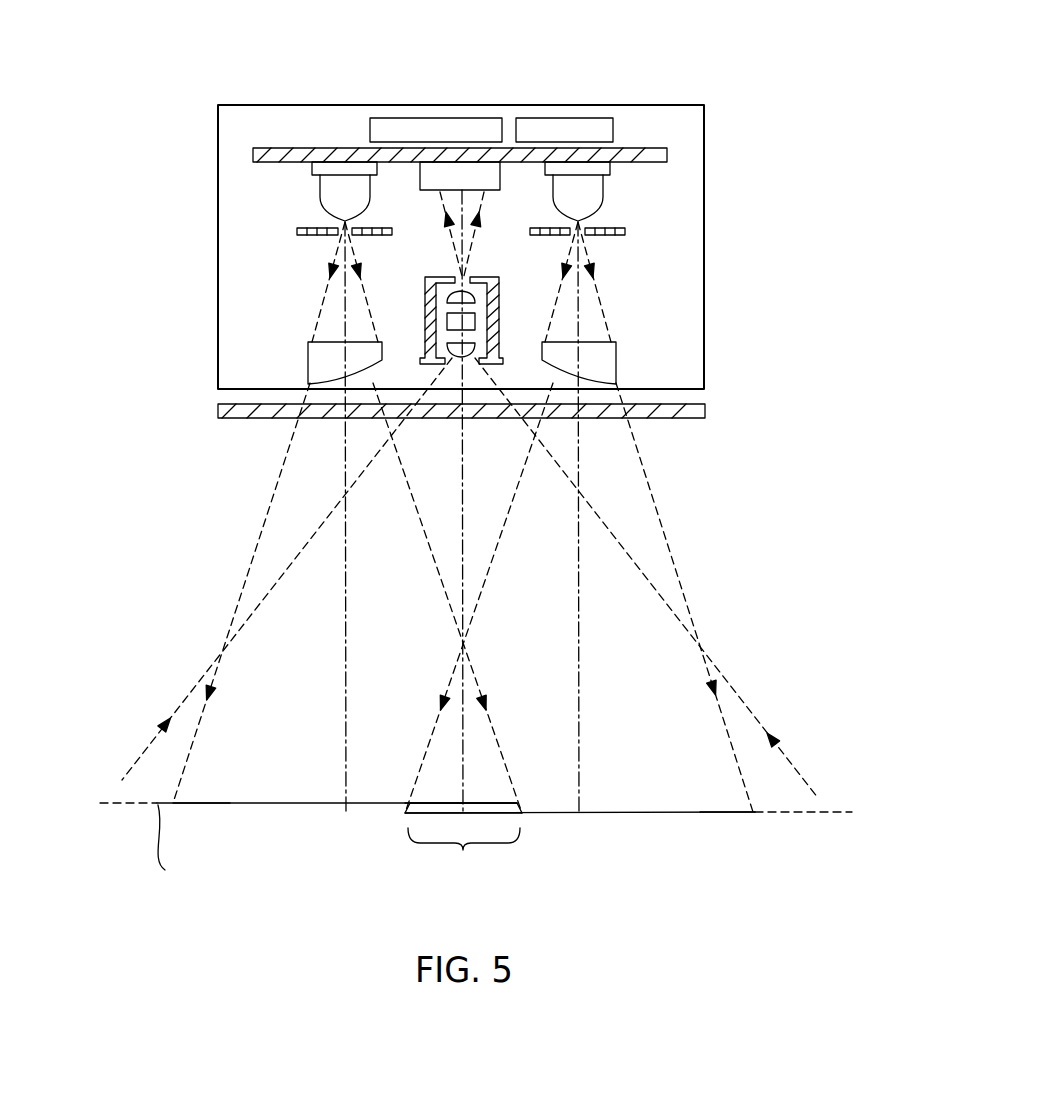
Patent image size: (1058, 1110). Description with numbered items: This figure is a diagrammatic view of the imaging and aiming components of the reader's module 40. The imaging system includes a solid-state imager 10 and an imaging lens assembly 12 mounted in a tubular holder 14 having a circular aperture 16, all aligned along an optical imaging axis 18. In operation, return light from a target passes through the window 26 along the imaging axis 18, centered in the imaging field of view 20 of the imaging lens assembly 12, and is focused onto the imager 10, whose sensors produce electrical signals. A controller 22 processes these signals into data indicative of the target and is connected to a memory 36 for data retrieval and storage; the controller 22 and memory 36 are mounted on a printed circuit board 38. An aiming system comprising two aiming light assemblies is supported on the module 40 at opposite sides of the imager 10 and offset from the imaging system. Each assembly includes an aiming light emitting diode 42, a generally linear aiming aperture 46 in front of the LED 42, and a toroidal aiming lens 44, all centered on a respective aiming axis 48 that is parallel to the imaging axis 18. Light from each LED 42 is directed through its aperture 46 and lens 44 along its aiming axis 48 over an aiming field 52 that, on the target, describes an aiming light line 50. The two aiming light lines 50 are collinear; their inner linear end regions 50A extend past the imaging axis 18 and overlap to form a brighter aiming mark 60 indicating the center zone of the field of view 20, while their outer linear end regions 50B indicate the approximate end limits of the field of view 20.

The module 40 is at (698, 43).
The printed circuit board 38 is at (667, 148).
The controller 22 is at (370, 132).
The memory 36 is at (613, 128).
The solid-state imager 10 is at (420, 183).
The aiming light emitting diode 42 is at (800, 157).
The aiming aperture 46 is at (300, 232).
The imaging lens assembly 12 is at (629, 319).
The tubular holder 14 is at (425, 290).
The circular aperture 16 is at (432, 354).
The optical imaging axis 18 is at (463, 470).
The toroidal aiming lens 44 is at (720, 378).
The window 26 is at (218, 412).
The aiming axis 48 is at (346, 604).
The aiming field 52 is at (680, 532).
The imaging field of view 20 is at (218, 660).
The aiming light line 50 is at (657, 812).
The inner linear end region 50A is at (435, 803).
The outer linear end region 50B is at (300, 805).
The aiming mark 60 is at (465, 856).